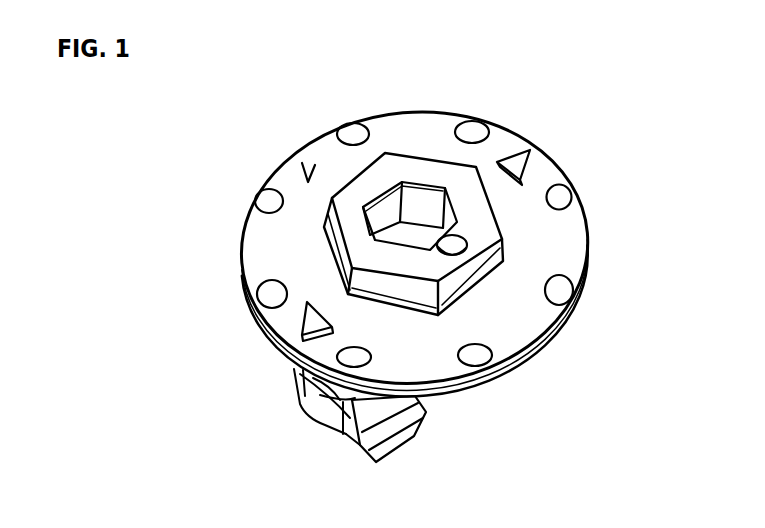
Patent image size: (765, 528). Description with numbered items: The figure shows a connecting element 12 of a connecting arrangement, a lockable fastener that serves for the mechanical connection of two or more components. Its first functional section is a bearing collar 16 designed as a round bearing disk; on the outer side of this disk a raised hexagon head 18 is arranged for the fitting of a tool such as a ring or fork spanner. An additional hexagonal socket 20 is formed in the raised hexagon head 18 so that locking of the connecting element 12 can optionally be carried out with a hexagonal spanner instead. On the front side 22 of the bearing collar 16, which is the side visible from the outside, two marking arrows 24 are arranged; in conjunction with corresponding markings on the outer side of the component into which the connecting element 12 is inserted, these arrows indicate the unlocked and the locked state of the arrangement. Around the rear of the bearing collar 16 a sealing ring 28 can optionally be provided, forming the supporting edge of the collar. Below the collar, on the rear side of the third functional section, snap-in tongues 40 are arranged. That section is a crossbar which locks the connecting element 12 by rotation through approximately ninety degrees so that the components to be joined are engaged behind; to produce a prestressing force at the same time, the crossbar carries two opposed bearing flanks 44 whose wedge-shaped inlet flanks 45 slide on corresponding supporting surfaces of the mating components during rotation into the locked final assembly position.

The connecting element 12 is at (178, 347).
The bearing collar 16 is at (429, 114).
The hexagon head 18 is at (480, 226).
The hexagonal socket 20 is at (422, 213).
The front side 22 is at (287, 158).
The marking arrows 24 is at (530, 156).
The sealing ring 28 is at (513, 363).
The snap-in tongues 40 is at (388, 452).
The bearing flanks 44 is at (327, 428).
The inlet flanks 45 is at (347, 433).